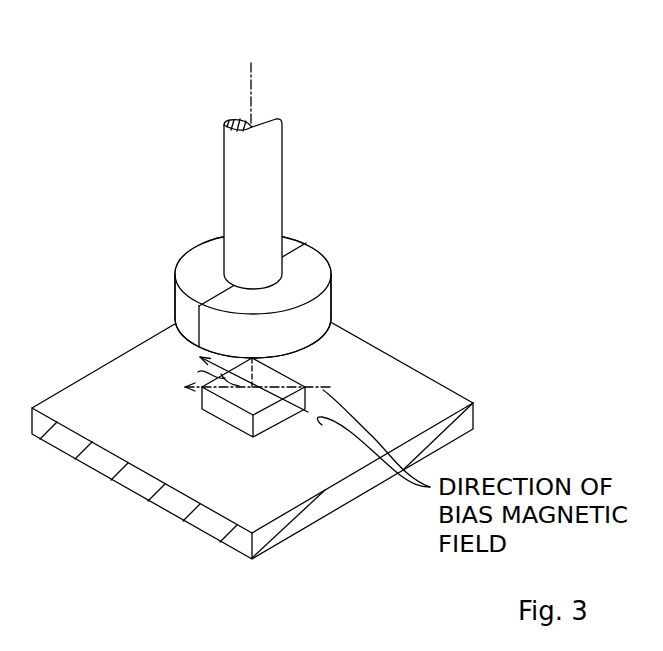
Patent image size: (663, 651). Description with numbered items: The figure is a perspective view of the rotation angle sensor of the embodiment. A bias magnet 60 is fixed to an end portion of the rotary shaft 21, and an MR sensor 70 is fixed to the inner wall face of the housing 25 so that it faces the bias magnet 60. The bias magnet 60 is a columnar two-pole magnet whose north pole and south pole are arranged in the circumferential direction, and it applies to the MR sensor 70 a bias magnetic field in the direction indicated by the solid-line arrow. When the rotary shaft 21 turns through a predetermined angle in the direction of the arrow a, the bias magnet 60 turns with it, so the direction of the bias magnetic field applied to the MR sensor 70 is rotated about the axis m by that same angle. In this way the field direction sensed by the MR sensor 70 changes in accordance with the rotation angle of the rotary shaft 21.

The rotary shaft 21 is at (282, 148).
The bias magnet 60 is at (324, 252).
The MR sensor 70 is at (288, 374).
The housing 25 is at (445, 386).
The arrow a is at (219, 192).
The axis m is at (254, 80).